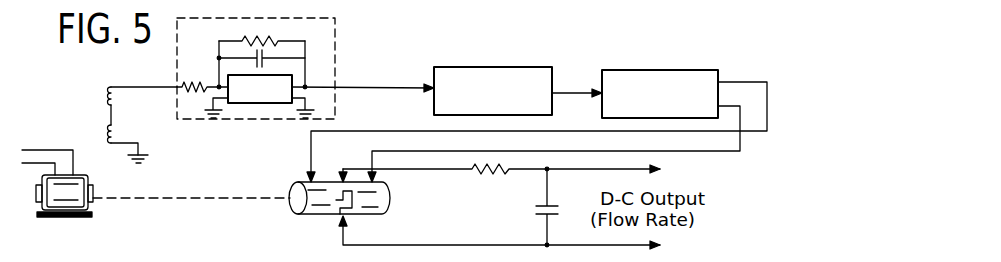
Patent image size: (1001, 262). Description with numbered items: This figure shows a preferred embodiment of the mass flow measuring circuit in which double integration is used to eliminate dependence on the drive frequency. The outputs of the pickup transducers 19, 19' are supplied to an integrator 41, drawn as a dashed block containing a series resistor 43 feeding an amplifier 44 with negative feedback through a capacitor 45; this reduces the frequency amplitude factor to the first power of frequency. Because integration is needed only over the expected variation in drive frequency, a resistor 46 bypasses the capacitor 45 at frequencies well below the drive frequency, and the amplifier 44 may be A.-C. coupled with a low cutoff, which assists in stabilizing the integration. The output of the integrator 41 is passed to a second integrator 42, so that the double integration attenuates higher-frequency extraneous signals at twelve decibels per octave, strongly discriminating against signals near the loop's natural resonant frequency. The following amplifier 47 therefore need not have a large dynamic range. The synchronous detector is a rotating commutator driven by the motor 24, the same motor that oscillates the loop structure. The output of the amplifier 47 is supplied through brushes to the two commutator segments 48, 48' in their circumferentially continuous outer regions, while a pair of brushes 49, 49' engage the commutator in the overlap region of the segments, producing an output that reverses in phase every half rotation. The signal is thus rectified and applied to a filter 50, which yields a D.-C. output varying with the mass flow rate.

The pickup transducer 19 is at (88, 126).
The pickup transducer 19' is at (90, 89).
The motor 24 is at (72, 188).
The integrator 41 is at (194, 20).
The second integrator 42 is at (492, 72).
The series resistor 43 is at (203, 81).
The amplifier 44 is at (260, 103).
The capacitor 45 is at (263, 54).
The resistor 46 is at (268, 40).
The amplifier 47 is at (657, 77).
The commutator segment 48 is at (331, 212).
The commutator segment 48' is at (383, 200).
The brush 49 is at (341, 159).
The brush 49' is at (370, 226).
The filter 50 is at (515, 209).